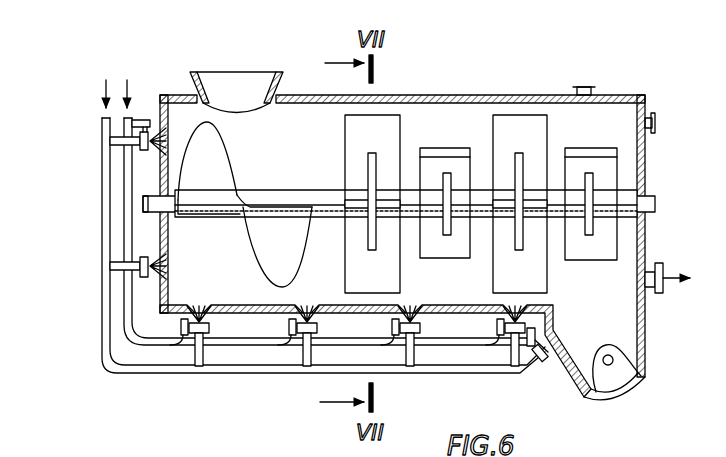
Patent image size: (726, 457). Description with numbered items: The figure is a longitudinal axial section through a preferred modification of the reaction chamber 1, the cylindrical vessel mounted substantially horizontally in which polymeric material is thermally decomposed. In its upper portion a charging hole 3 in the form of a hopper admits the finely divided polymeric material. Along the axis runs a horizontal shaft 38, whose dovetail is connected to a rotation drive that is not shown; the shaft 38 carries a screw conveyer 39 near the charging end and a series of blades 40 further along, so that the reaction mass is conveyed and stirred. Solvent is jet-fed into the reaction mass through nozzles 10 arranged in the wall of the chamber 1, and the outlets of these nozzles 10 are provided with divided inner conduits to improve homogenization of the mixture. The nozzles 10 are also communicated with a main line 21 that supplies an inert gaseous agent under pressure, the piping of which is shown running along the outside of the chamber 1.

The reaction chamber 1 is at (466, 92).
The charging hole 3 is at (196, 80).
The nozzles 10 is at (138, 153).
The main line 21 is at (127, 190).
The horizontal shaft 38 is at (288, 196).
The screw conveyer 39 is at (222, 168).
The blades 40 is at (450, 157).